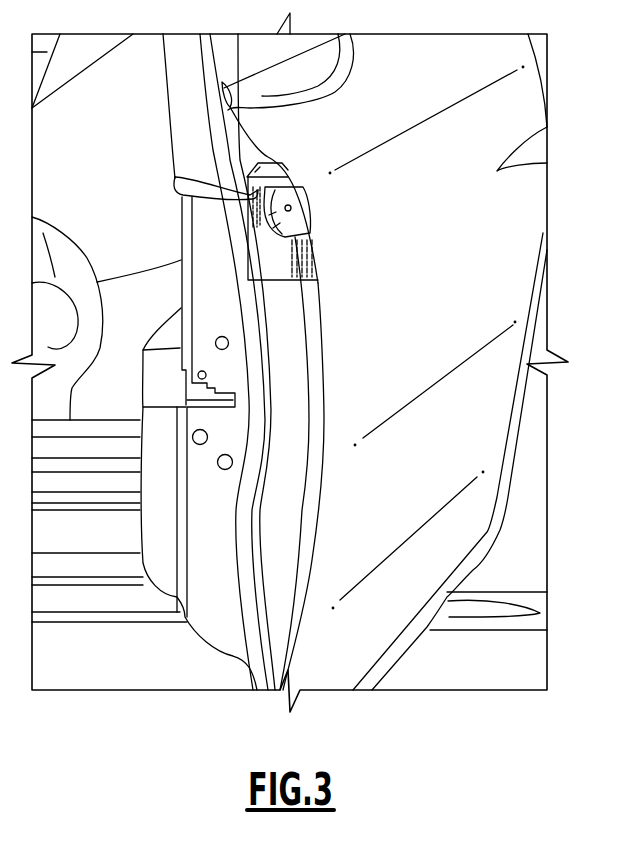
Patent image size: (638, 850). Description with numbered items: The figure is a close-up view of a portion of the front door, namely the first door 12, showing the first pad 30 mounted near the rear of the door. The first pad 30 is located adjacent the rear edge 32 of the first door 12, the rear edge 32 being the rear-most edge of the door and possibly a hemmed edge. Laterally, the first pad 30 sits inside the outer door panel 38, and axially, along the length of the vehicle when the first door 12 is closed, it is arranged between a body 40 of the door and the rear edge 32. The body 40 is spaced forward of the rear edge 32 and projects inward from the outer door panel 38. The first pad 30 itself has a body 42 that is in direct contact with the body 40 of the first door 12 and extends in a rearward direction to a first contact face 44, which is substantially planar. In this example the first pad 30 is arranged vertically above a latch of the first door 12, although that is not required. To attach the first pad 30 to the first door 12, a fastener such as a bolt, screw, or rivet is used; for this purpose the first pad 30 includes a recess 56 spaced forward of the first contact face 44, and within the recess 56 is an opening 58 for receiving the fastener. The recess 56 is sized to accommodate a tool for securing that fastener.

The first door 12 is at (377, 613).
The first pad 30 is at (271, 270).
The rear edge 32 is at (317, 260).
The outer door panel 38 is at (510, 277).
The body 40 is at (284, 479).
The body 42 is at (273, 170).
The first contact face 44 is at (173, 177).
The recess 56 is at (292, 221).
The opening 58 is at (292, 208).